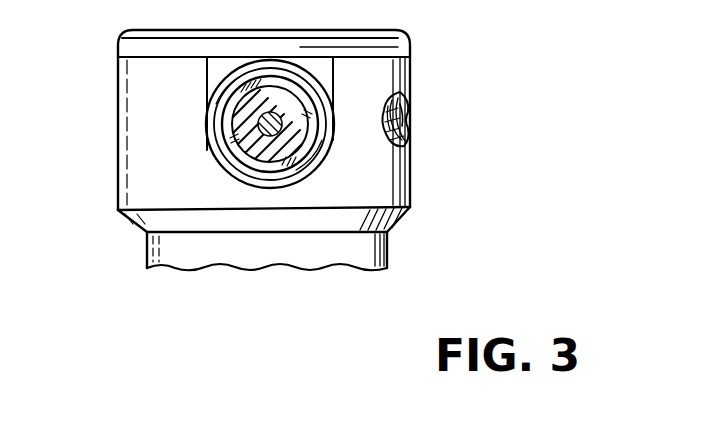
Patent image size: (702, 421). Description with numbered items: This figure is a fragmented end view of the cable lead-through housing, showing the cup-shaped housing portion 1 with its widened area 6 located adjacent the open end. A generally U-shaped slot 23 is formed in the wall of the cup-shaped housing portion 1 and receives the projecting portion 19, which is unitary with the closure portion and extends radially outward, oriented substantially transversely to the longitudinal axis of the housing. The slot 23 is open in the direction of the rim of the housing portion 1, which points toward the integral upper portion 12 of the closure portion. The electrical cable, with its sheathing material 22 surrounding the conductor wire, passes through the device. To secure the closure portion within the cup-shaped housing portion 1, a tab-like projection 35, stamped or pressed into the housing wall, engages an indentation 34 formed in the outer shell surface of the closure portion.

The cup-shaped housing portion 1 is at (387, 248).
The widened area 6 is at (119, 101).
The upper portion 12 is at (414, 60).
The projecting portion 19 is at (225, 166).
The sheathing material 22 is at (236, 137).
The U-shaped slot 23 is at (206, 70).
The indentation 34 is at (406, 128).
The tab-like projection 35 is at (406, 123).